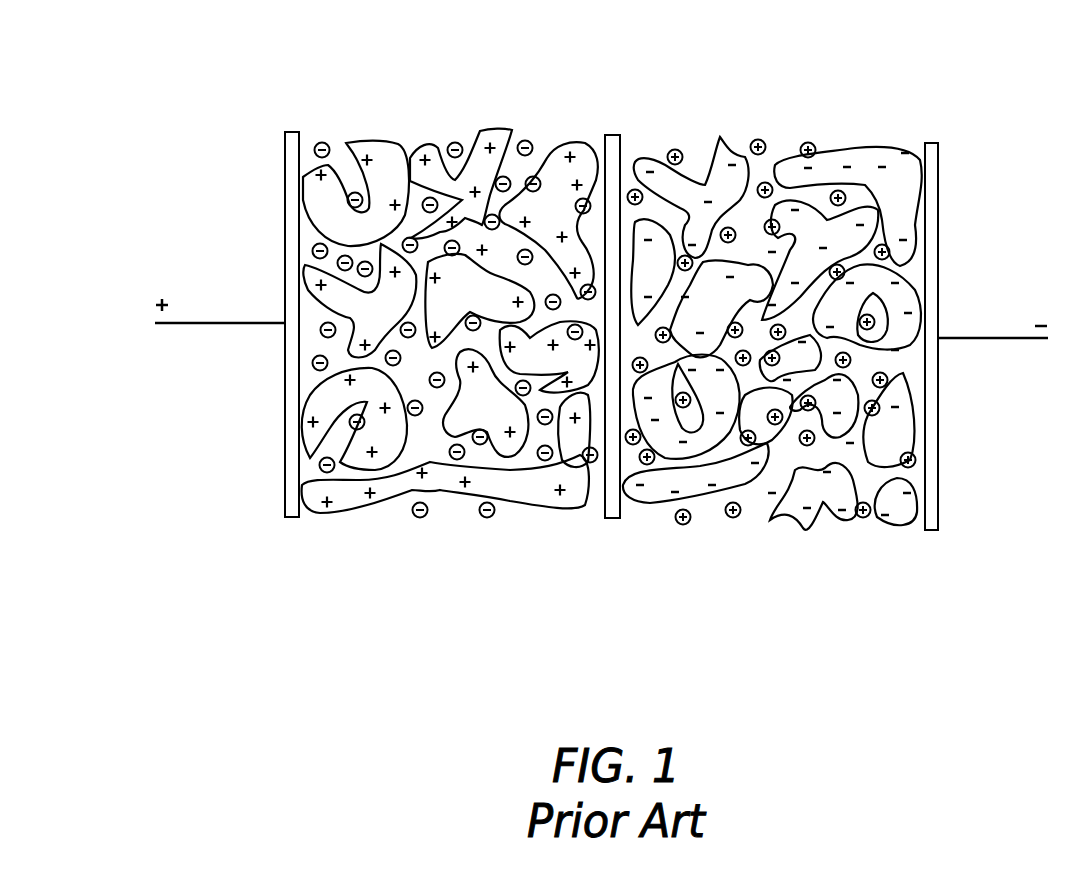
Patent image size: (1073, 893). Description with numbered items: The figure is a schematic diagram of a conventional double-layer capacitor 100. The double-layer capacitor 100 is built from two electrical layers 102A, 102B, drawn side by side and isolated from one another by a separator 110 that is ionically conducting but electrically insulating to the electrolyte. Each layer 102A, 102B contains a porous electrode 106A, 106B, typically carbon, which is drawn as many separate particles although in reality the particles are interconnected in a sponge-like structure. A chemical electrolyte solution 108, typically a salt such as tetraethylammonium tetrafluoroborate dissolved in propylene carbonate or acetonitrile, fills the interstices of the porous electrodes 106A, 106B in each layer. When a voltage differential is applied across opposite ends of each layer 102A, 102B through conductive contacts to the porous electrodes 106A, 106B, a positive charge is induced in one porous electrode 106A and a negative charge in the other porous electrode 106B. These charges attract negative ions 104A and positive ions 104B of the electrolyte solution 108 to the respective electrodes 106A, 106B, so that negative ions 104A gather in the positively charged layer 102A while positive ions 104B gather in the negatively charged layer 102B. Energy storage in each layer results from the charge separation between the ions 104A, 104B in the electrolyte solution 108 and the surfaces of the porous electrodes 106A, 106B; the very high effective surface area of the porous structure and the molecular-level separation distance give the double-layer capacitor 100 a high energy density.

The double-layer capacitor 100 is at (955, 83).
The electrical layer 102A is at (432, 115).
The electrical layer 102B is at (803, 118).
The negative ions 104A is at (318, 142).
The positive ions 104B is at (822, 148).
The porous electrode 106A is at (313, 178).
The porous electrode 106B is at (905, 180).
The chemical electrolyte solution 108 is at (695, 133).
The separator 110 is at (612, 521).